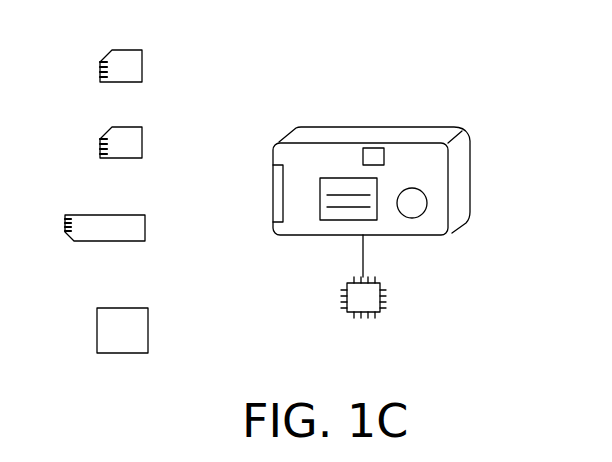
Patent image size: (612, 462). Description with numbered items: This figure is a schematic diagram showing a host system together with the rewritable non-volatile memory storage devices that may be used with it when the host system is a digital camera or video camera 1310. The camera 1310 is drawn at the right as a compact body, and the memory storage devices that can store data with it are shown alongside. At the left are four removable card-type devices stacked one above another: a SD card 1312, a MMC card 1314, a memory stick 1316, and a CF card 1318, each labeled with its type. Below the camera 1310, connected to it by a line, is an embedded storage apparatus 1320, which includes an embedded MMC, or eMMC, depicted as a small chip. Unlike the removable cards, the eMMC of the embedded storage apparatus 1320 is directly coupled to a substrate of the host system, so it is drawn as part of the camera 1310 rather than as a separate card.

The digital camera (video camera) 1310 is at (470, 167).
The SD card 1312 is at (142, 57).
The MMC card 1314 is at (142, 131).
The memory stick 1316 is at (145, 227).
The CF card 1318 is at (148, 323).
The embedded storage apparatus 1320 is at (385, 300).